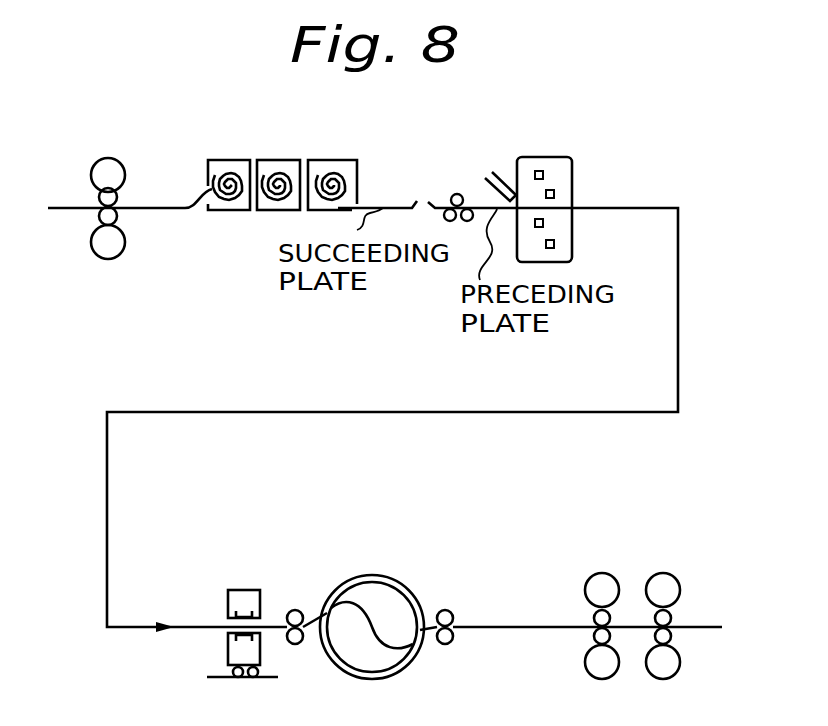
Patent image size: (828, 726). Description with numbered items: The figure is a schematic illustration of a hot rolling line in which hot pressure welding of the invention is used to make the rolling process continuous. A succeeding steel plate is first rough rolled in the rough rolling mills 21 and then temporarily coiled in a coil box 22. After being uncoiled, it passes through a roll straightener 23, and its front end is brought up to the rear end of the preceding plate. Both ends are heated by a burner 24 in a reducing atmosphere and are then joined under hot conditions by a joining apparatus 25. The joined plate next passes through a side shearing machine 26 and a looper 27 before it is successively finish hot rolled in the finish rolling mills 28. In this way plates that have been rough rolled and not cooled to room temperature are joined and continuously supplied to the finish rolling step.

The rough rolling mills 21 is at (101, 157).
The coil box 22 is at (281, 160).
The roll straightener 23 is at (455, 194).
The burner 24 is at (496, 173).
The joining apparatus 25 is at (573, 170).
The side shearing machine 26 is at (245, 588).
The looper 27 is at (385, 574).
The finish rolling mills 28 is at (628, 570).